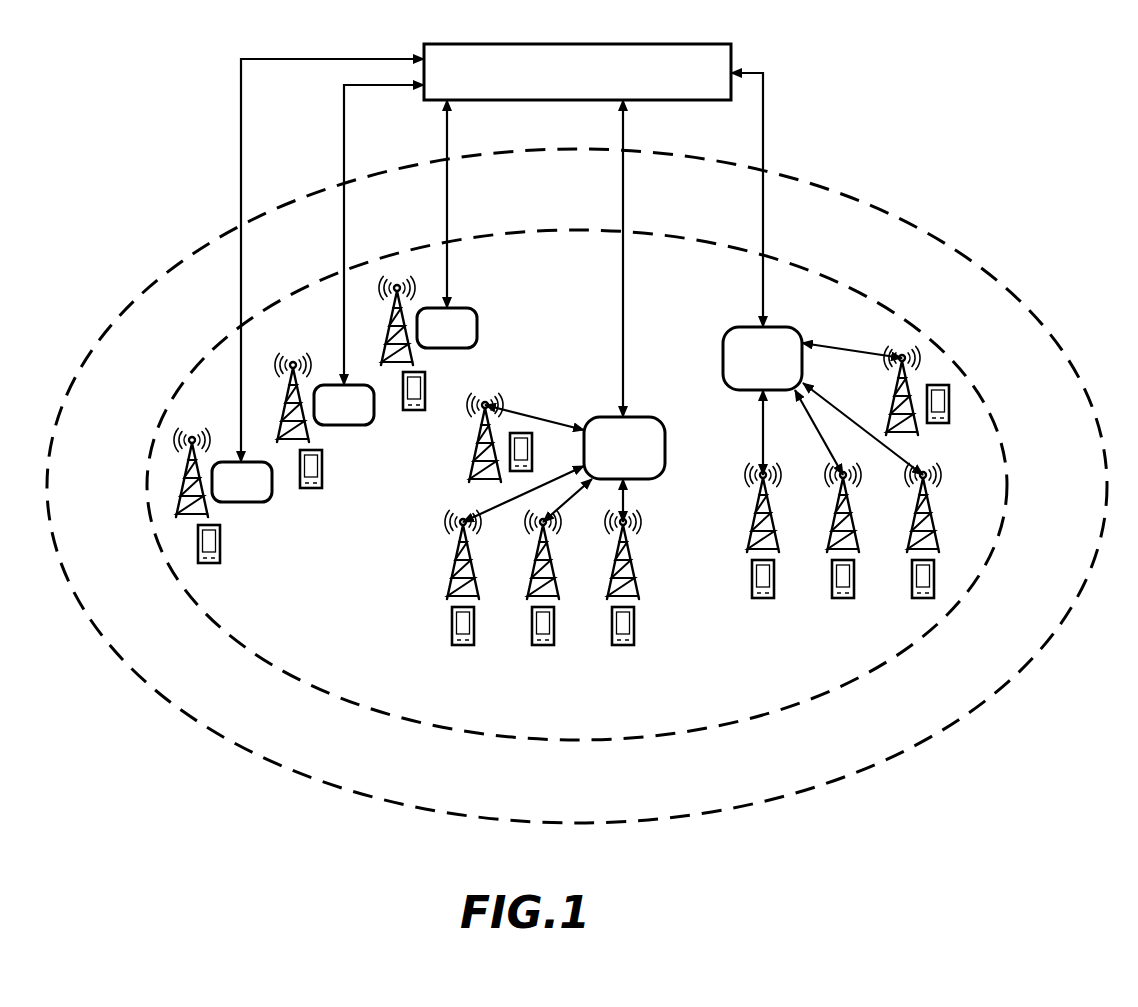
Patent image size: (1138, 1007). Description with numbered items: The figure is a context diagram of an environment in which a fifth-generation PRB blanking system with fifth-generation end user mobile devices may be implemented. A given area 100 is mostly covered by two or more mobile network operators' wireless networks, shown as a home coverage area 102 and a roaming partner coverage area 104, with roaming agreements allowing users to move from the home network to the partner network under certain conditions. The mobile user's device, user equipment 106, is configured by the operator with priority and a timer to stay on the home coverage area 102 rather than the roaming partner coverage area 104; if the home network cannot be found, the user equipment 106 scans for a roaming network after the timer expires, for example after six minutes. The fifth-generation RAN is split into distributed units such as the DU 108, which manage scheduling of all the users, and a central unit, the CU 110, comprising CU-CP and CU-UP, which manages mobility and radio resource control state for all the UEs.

The given area 100 is at (976, 178).
The home coverage area 102 is at (733, 693).
The roaming partner coverage area 104 is at (746, 783).
The user equipment 106 is at (220, 545).
The distributed unit 108 is at (267, 502).
The central unit 110 is at (679, 44).